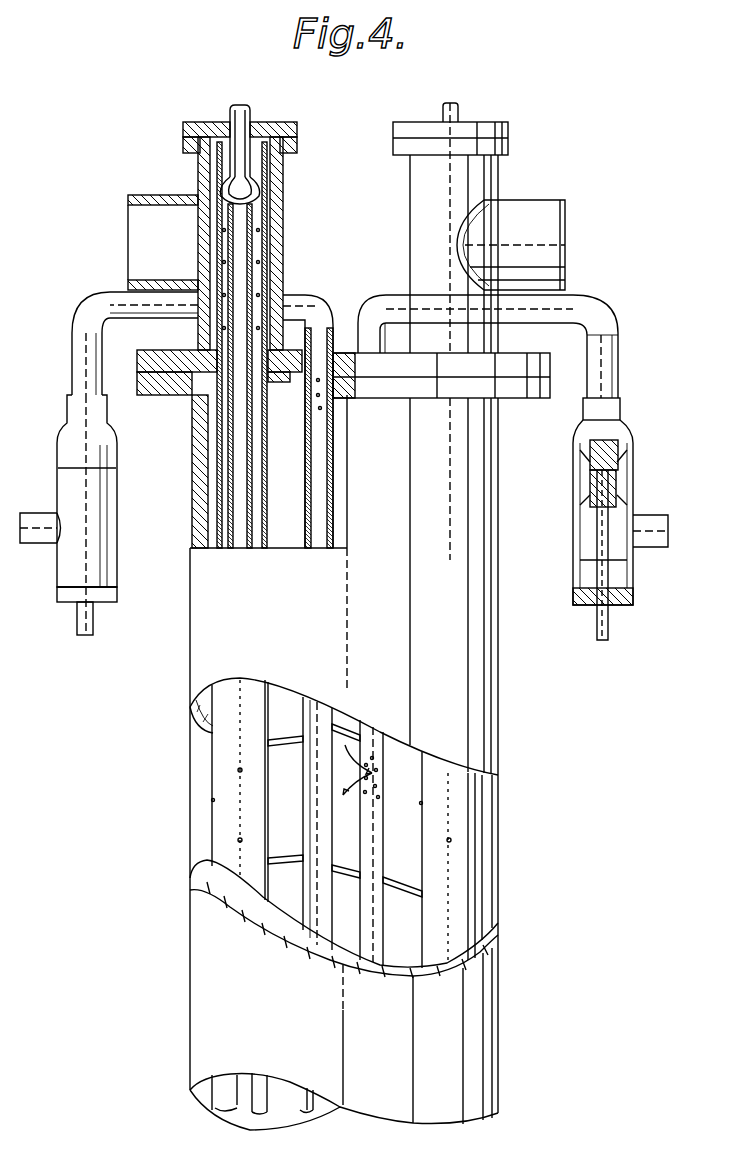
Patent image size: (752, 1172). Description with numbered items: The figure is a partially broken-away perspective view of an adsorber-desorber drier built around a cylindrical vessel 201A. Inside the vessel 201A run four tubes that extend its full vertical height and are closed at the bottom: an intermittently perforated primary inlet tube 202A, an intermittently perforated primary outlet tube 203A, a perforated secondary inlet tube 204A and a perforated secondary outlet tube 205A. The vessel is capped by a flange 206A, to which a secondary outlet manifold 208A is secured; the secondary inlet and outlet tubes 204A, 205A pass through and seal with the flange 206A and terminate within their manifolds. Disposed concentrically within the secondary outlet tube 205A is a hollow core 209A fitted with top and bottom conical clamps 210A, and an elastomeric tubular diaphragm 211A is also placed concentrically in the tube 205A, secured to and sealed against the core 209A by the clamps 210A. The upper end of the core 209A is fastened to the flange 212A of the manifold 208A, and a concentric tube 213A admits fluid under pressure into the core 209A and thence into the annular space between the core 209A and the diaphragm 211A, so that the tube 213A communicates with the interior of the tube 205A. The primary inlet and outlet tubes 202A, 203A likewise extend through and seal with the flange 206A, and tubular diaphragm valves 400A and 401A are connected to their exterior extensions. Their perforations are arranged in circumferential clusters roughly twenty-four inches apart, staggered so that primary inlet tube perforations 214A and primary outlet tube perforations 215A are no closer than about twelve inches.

The cylindrical vessel 201A is at (490, 685).
The primary inlet tube 202A is at (380, 857).
The primary outlet tube 203A is at (308, 823).
The secondary inlet tube 204A is at (467, 813).
The secondary outlet tube 205A is at (230, 783).
The flange 206A is at (513, 365).
The secondary outlet manifold 208A is at (283, 193).
The hollow core 209A is at (240, 260).
The conical clamps 210A is at (277, 165).
The elastomeric tubular diaphragm 211A is at (253, 233).
The flange of the manifold 212A is at (297, 128).
The concentric tube 213A is at (245, 118).
The primary inlet tube perforations 214A is at (386, 767).
The primary outlet tube perforations 215A is at (336, 403).
The tubular diaphragm valve 400A is at (576, 553).
The tubular diaphragm valve 401A is at (100, 547).